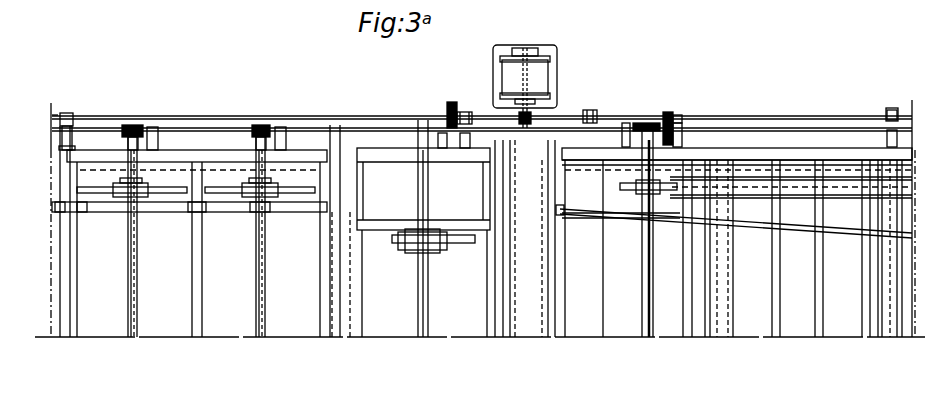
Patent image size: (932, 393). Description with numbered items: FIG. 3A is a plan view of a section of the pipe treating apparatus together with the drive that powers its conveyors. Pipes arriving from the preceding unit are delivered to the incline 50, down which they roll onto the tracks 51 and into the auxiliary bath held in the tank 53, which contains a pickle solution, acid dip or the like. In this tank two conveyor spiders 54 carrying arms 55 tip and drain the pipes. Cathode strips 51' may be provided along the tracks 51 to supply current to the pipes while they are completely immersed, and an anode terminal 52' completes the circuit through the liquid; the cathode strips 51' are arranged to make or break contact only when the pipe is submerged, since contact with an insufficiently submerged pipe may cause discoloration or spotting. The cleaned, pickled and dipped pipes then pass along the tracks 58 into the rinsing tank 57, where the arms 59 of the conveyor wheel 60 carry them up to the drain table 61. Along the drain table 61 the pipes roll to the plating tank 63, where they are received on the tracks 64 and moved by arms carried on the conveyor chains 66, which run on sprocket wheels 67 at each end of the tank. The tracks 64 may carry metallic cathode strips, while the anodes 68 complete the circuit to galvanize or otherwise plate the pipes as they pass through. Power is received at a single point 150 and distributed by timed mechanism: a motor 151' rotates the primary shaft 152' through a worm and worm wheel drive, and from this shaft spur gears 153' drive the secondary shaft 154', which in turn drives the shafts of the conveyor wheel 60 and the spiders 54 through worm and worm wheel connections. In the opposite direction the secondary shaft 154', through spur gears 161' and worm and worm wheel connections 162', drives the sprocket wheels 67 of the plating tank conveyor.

The incline 50 is at (60, 216).
The tracks 51 is at (76, 224).
The cathode strips 51' is at (100, 224).
The anode terminal 52' is at (196, 237).
The tank 53 is at (213, 160).
The conveyor spiders 54 is at (114, 187).
The arms 55 is at (152, 192).
The rinsing tank 57 is at (496, 190).
The tracks 58 is at (423, 228).
The arms 59 is at (393, 243).
The conveyor wheel 60 is at (420, 241).
The drain table 61 is at (540, 276).
The tank 63 is at (556, 190).
The tracks 64 is at (624, 220).
The conveyor chains 66 is at (695, 194).
The sprocket wheels 67 is at (620, 188).
The anodes 68 is at (606, 298).
The motor shaft coupling 150 is at (522, 128).
The motor 151' is at (541, 76).
The primary shaft 152' is at (508, 112).
The spur gears 153' is at (466, 107).
The secondary shaft 154' is at (482, 109).
The spur gears 161' is at (697, 105).
The worm and worm wheel connections 162' is at (672, 116).